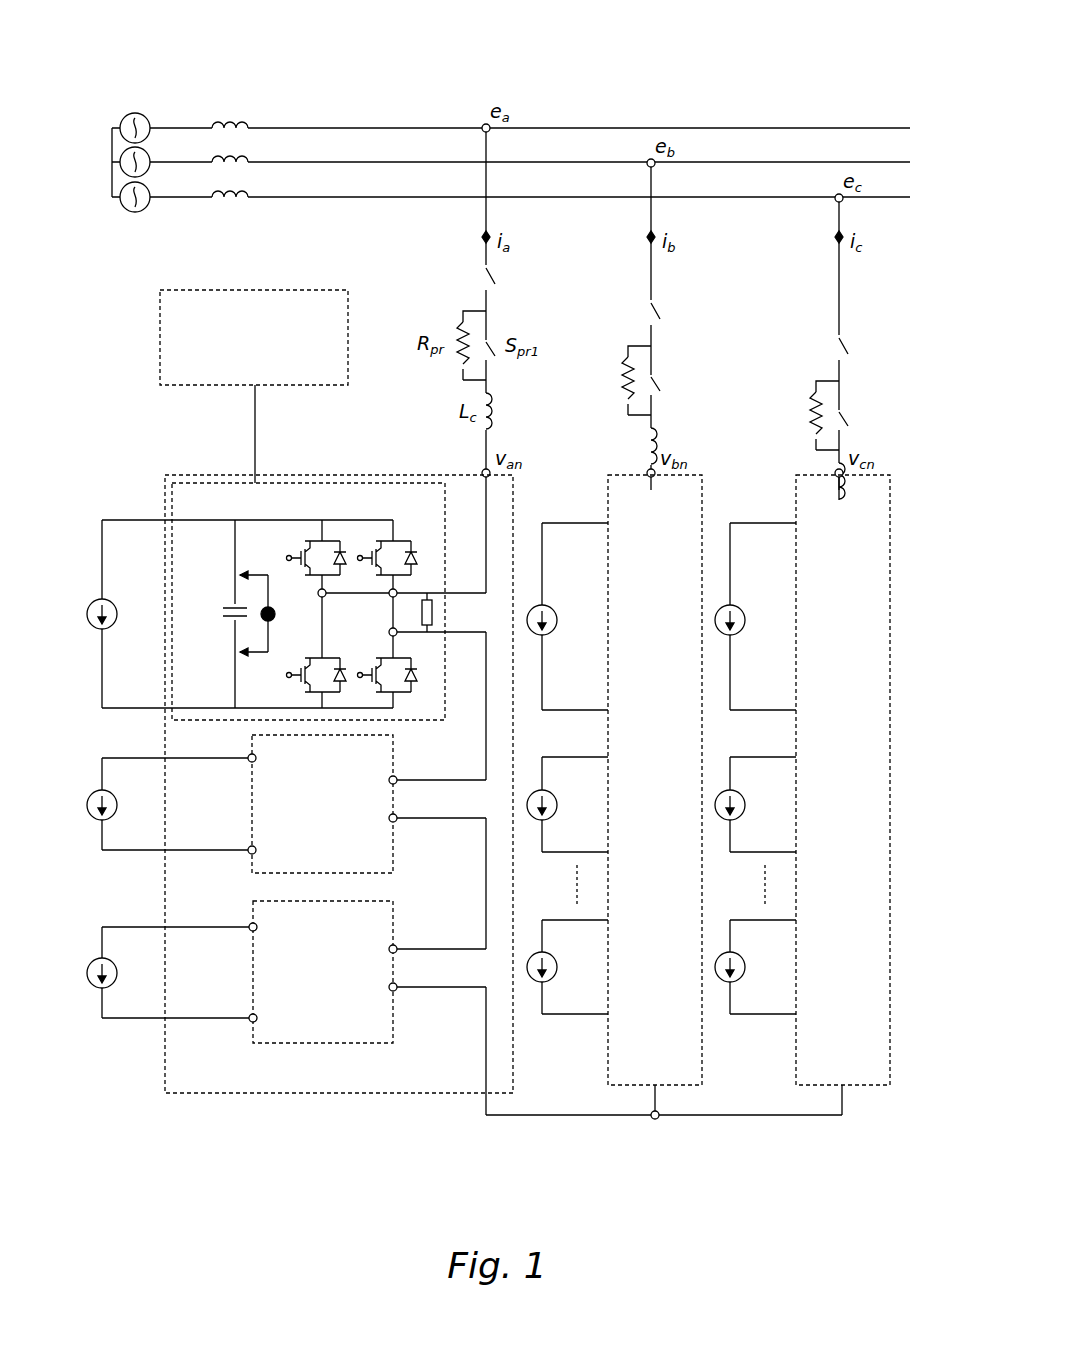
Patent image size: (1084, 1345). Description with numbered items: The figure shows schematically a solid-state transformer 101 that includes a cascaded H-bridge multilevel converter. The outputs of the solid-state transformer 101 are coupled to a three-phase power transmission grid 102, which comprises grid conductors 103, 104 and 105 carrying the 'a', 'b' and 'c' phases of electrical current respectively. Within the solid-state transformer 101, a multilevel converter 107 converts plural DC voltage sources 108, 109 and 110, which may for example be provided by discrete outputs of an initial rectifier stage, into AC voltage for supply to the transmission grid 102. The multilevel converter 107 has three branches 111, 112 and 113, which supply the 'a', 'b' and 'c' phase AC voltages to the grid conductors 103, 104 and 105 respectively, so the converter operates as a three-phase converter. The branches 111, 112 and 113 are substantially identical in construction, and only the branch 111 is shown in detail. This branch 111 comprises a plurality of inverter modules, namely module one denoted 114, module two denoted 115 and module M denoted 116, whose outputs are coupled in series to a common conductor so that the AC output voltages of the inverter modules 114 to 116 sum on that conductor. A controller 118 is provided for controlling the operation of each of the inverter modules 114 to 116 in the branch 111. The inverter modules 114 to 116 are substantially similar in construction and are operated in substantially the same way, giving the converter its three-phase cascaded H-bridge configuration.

The solid-state transformer 101 is at (186, 1172).
The three-phase power transmission grid 102 is at (797, 61).
The grid conductor 103 is at (885, 127).
The grid conductor 104 is at (908, 165).
The grid conductor 105 is at (898, 200).
The multilevel converter 107 is at (727, 1165).
The DC voltage source 108 is at (100, 602).
The DC voltage source 109 is at (100, 792).
The DC voltage source 110 is at (100, 960).
The branch 111 is at (330, 1094).
The branch 112 is at (626, 1086).
The branch 113 is at (824, 1086).
The inverter module 114 is at (207, 514).
The inverter module 115 is at (304, 864).
The inverter module 116 is at (304, 1033).
The controller 118 is at (302, 378).